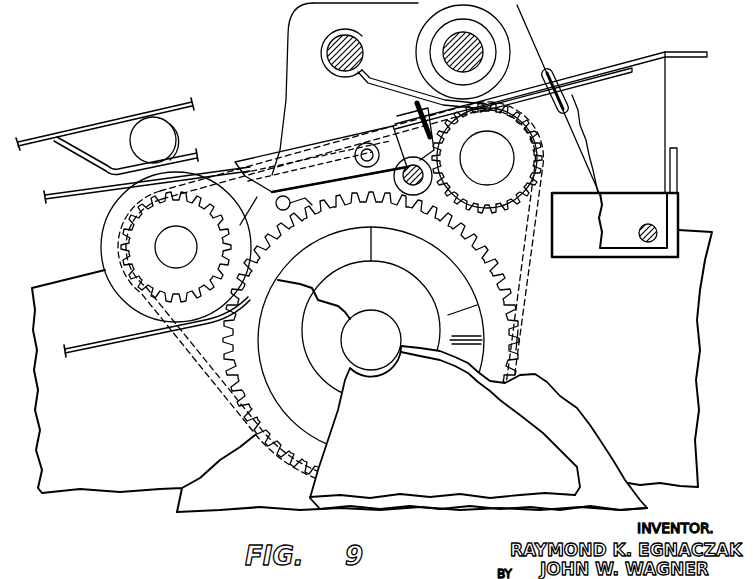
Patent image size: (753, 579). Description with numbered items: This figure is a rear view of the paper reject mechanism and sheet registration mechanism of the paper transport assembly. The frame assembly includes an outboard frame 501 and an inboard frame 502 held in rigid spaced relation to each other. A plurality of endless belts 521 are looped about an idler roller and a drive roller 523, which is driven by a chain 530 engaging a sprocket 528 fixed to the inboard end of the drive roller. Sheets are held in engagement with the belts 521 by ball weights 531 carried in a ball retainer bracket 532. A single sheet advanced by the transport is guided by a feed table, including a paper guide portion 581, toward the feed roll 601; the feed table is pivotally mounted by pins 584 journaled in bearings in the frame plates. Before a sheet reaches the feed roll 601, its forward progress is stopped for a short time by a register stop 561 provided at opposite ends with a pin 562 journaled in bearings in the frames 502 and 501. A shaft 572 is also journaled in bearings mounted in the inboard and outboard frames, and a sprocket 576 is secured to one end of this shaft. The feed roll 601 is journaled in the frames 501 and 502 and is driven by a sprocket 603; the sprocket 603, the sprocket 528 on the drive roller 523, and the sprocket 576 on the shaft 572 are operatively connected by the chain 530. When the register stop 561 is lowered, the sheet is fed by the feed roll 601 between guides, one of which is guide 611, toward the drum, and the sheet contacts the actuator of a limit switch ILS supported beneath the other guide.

The outboard frame 501 is at (695, 336).
The inboard frame 502 is at (578, 412).
The endless belts 521 is at (100, 345).
The drive roller 523 is at (189, 218).
The sprocket 528 is at (140, 236).
The chain 530 is at (530, 258).
The ball weights 531 is at (182, 125).
The ball retainer bracket 532 is at (78, 155).
The register stop 561 is at (409, 97).
The pin 562 is at (406, 195).
The shaft 572 is at (378, 318).
The sprocket 576 is at (520, 338).
The paper guide portion 581 is at (397, 115).
The pins 584 is at (321, 159).
The feed roll 601 is at (468, 182).
The sprocket 603 is at (534, 183).
The guide 611 is at (380, 68).
The limit switch ILS is at (672, 212).